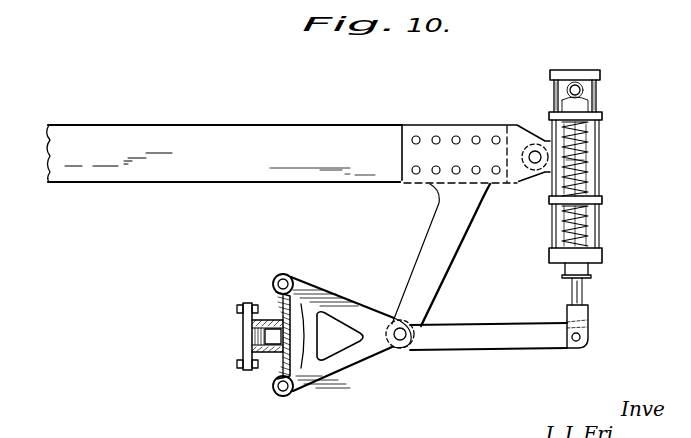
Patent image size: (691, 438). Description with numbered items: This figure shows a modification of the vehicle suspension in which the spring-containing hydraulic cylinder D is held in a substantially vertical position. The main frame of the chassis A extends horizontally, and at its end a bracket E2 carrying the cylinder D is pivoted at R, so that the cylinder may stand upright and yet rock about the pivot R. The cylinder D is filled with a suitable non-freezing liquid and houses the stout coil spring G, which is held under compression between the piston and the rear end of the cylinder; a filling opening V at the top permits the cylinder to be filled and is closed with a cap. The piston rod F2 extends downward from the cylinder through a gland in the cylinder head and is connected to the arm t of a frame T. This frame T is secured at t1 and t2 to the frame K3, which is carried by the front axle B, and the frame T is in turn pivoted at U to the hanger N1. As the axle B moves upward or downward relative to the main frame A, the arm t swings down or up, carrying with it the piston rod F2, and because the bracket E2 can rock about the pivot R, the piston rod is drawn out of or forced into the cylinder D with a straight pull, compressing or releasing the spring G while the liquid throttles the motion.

The main frame of the chassis A is at (268, 131).
The pivot R is at (533, 152).
The bracket E2 is at (602, 152).
The filling opening V is at (576, 84).
The hydraulic cylinder D is at (597, 103).
The coil spring G is at (592, 179).
The piston rod F2 is at (584, 290).
The arm t is at (530, 350).
The hanger N1 is at (448, 268).
The pivot U is at (406, 342).
The frame T is at (376, 366).
The securing point t1 is at (288, 274).
The securing point t2 is at (288, 395).
The frame K3 is at (268, 298).
The front axle B is at (260, 340).